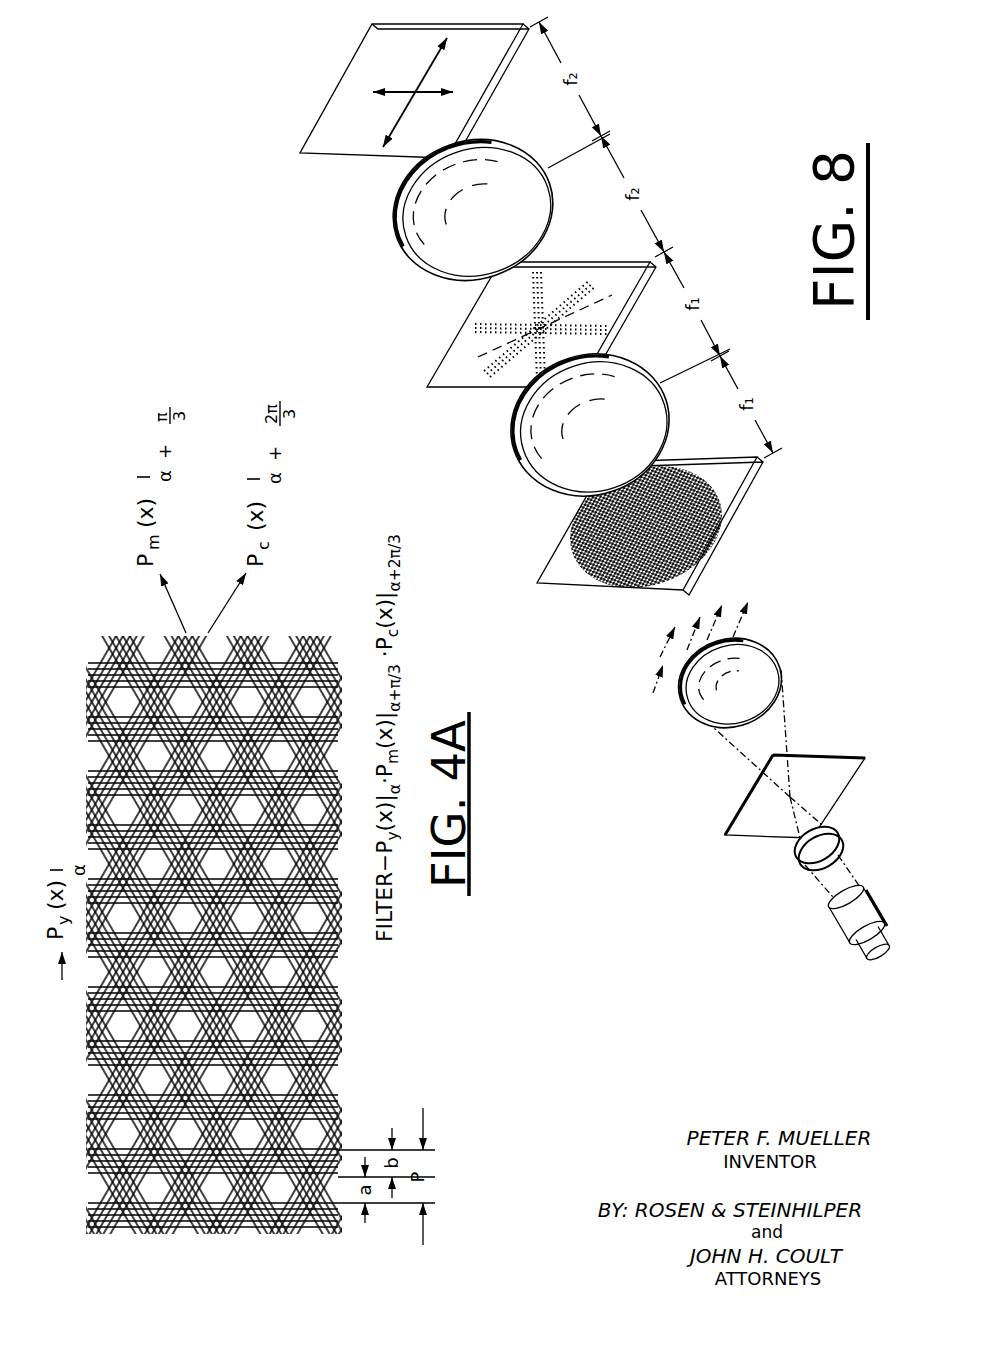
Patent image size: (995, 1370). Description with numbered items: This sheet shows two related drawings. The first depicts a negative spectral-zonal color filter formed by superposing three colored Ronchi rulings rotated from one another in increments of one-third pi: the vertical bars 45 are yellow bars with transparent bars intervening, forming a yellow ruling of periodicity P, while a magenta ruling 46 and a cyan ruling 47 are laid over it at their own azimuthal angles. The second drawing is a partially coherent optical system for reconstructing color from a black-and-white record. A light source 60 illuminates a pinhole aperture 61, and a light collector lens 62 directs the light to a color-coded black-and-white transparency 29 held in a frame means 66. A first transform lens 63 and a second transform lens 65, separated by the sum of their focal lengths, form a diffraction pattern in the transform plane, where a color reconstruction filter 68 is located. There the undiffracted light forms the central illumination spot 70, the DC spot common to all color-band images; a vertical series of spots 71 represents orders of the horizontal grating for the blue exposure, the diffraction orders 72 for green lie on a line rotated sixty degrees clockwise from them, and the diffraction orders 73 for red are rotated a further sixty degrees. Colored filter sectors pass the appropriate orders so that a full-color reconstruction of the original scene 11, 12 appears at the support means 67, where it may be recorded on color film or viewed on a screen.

In FIG. 4A, the vertical bars 45 is at (151, 662).
In FIG. 4A, the magenta ruling 46 is at (95, 646).
In FIG. 4A, the cyan ruling 47 is at (263, 640).
In FIG. 8, the original scene 11 is at (390, 96).
In FIG. 8, the original scene 12 is at (423, 72).
In FIG. 8, the support means 67 is at (340, 154).
In FIG. 8, the second transform lens 65 is at (418, 262).
In FIG. 8, the color reconstruction filter 68 is at (467, 387).
In FIG. 8, the central illumination spot 70 is at (530, 322).
In FIG. 8, the vertical series of spots 71 is at (490, 342).
In FIG. 8, the diffraction orders 72 is at (545, 292).
In FIG. 8, the diffraction orders 73 is at (588, 298).
In FIG. 8, the first transform lens 63 is at (543, 478).
In FIG. 8, the frame means 66 is at (567, 583).
In FIG. 8, the color-coded black-and-white transparency 29 is at (717, 483).
In FIG. 8, the light collector lens 62 is at (687, 707).
In FIG. 8, the pinhole aperture 61 is at (788, 798).
In FIG. 8, the light source 60 is at (848, 922).